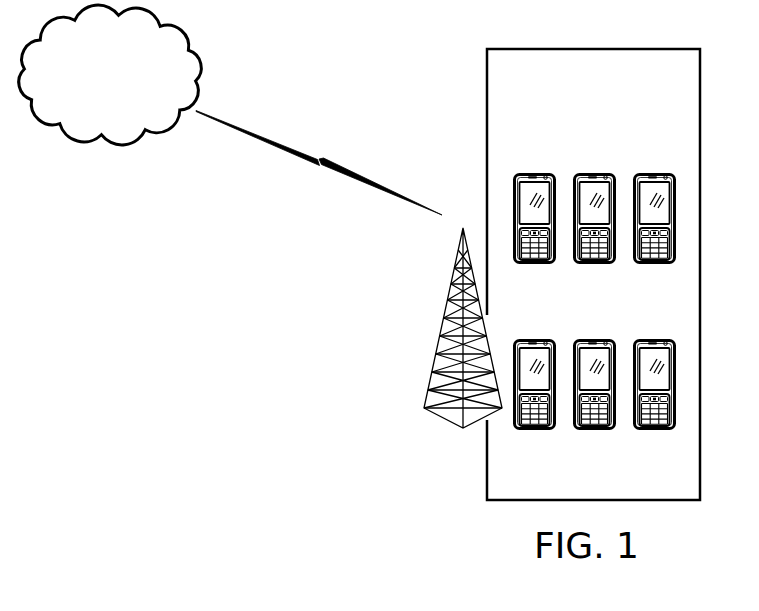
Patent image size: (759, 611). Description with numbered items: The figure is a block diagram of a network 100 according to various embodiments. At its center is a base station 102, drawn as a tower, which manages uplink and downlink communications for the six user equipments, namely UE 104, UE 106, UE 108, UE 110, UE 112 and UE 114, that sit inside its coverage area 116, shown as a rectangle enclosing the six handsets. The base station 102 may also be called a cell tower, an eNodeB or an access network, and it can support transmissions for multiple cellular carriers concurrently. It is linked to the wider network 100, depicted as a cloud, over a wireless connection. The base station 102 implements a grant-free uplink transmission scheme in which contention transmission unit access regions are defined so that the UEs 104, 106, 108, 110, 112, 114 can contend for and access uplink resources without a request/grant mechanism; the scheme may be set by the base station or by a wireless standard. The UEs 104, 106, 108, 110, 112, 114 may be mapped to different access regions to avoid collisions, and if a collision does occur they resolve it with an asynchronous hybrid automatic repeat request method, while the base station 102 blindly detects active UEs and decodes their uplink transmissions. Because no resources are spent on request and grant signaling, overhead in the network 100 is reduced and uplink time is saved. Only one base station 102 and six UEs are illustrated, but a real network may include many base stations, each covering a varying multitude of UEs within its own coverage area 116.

The network 100 is at (88, 107).
The base station 102 is at (447, 418).
The UE 104 is at (535, 173).
The UE 106 is at (595, 173).
The UE 108 is at (651, 173).
The UE 110 is at (535, 430).
The UE 112 is at (595, 430).
The UE 114 is at (651, 430).
The coverage area 116 is at (632, 96).